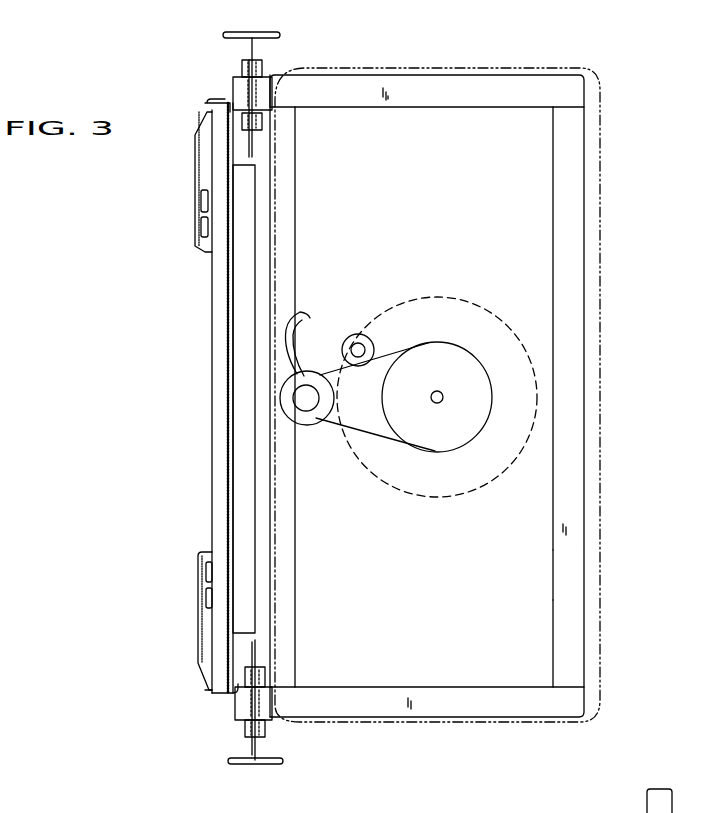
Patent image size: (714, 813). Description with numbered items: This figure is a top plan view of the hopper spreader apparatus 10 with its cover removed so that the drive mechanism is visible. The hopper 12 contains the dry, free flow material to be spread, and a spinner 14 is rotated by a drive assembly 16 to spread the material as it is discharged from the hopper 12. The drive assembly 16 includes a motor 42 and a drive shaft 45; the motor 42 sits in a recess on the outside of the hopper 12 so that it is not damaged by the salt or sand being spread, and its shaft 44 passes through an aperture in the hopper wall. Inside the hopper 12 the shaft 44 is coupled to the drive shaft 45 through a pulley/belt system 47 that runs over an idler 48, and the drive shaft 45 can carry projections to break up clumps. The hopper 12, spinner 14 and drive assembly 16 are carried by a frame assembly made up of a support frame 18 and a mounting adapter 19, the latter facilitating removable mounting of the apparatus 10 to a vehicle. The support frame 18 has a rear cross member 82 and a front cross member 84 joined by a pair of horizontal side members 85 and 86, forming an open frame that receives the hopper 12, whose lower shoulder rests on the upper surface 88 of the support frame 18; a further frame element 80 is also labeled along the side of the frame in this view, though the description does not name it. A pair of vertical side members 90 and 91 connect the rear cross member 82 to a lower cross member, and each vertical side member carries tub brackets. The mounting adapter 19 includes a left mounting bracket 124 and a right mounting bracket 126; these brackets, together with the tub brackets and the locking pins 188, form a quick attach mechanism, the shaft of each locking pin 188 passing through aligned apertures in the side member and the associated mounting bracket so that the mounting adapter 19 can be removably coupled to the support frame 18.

The hopper spreader apparatus 10 is at (667, 143).
The hopper 12 is at (600, 520).
The spinner 14 is at (605, 300).
The drive assembly 16 is at (325, 314).
The support frame 18 is at (292, 732).
The mounting adapter 19 is at (198, 612).
The motor 42 is at (296, 394).
The shaft 44 is at (305, 402).
The drive shaft 45 is at (438, 404).
The pulley/belt system 47 is at (328, 427).
The idler 48 is at (347, 334).
The right frame member 80 is at (568, 421).
The rear cross member 82 is at (290, 589).
The front cross member 84 is at (568, 633).
The horizontal side member 85 is at (513, 92).
The horizontal side member 86 is at (510, 700).
The upper surface 88 is at (568, 573).
The vertical side member 90 is at (258, 88).
The vertical side member 91 is at (237, 708).
The left mounting bracket 124 is at (235, 701).
The right mounting bracket 126 is at (233, 84).
The locking pin 188 is at (270, 33).